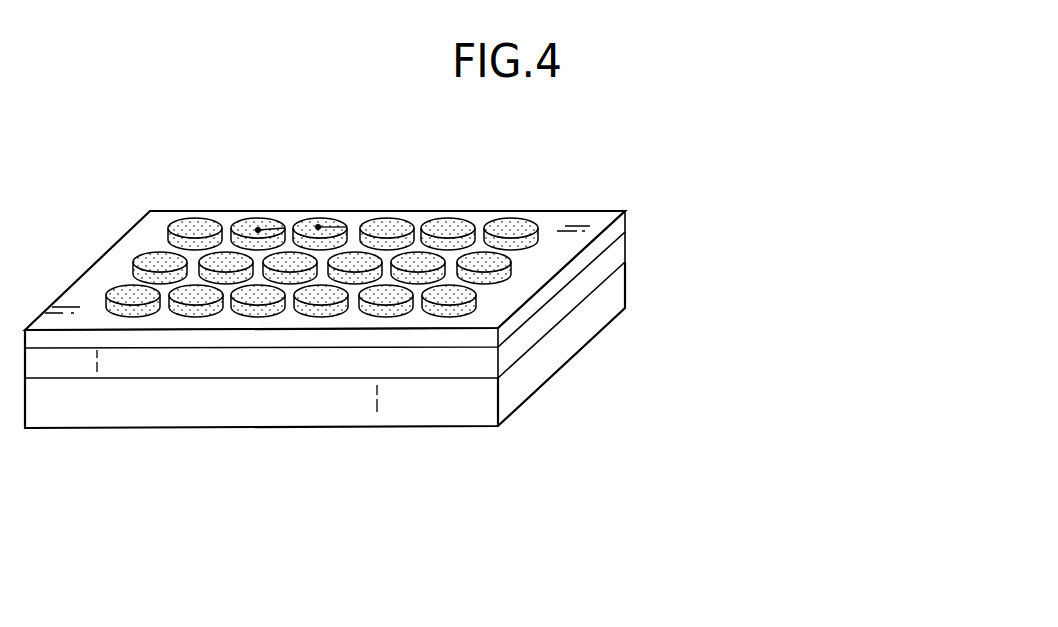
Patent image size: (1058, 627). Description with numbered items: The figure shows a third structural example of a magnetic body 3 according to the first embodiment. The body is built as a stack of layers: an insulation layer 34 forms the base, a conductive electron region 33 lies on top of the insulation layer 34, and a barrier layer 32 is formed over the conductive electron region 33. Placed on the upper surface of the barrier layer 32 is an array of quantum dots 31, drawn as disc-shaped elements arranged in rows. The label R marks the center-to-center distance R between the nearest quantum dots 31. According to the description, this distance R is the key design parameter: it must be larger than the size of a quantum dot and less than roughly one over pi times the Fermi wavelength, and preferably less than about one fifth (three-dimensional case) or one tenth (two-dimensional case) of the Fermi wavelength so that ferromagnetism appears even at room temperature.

The magnetic body 3 is at (142, 187).
The quantum dots 31 is at (508, 228).
The barrier layer 32 is at (568, 273).
The conductive electron region 33 is at (535, 330).
The insulation layer 34 is at (473, 408).
The center-to-center distance R is at (262, 229).